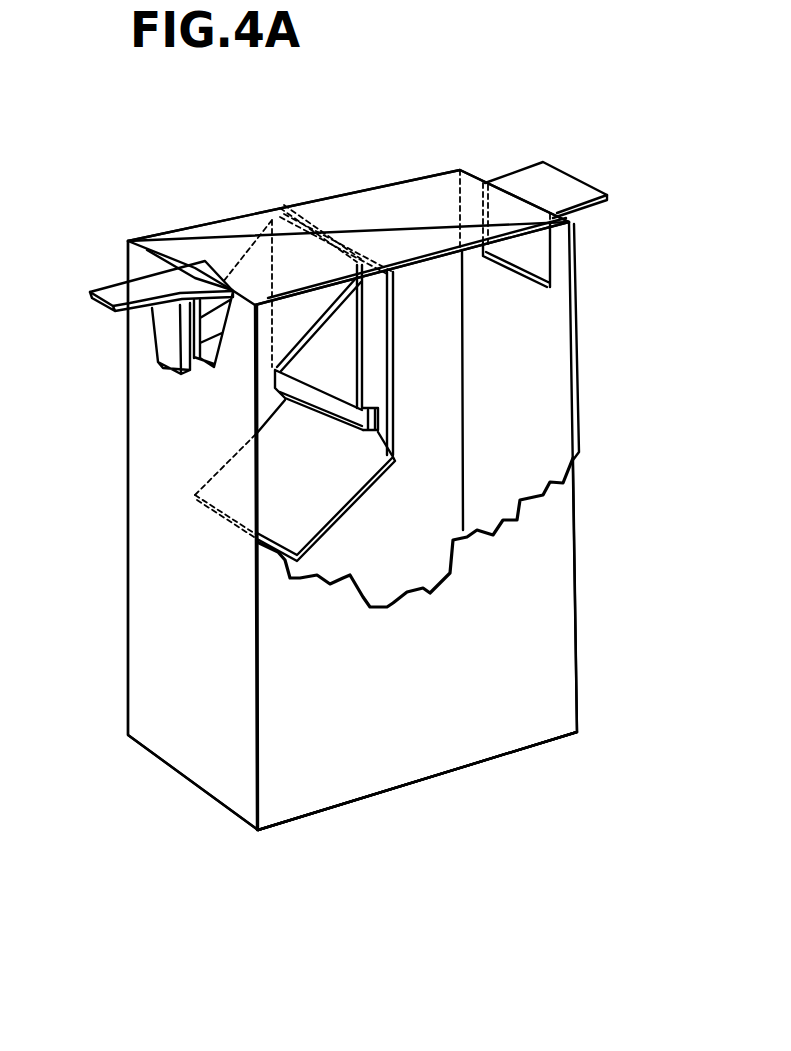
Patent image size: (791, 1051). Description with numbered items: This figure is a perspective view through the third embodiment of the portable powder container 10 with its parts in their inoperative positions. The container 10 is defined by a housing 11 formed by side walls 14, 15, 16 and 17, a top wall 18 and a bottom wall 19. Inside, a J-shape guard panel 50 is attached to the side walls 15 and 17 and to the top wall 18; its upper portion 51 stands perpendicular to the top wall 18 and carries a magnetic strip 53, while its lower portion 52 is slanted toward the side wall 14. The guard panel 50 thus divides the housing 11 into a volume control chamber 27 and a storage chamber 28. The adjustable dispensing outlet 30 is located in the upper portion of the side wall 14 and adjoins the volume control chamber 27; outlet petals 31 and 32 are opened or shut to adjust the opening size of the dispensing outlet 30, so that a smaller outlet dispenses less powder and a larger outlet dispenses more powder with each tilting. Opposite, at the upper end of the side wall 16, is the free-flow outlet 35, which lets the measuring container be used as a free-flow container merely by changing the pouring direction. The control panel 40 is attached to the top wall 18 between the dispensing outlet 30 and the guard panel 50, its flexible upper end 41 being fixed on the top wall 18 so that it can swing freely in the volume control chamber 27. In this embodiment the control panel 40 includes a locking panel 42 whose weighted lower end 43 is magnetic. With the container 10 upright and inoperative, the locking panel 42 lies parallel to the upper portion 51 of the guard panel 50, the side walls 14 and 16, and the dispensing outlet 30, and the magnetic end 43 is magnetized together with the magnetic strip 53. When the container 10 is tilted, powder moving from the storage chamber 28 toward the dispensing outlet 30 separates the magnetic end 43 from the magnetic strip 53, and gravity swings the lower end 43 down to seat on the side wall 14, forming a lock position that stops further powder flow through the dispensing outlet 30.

The portable powder container 10 is at (603, 512).
The housing 11 is at (583, 582).
The side wall 14 is at (180, 648).
The side wall 15 is at (555, 700).
The side wall 16 is at (533, 352).
The side wall 17 is at (405, 182).
The top wall 18 is at (441, 192).
The bottom wall 19 is at (490, 765).
The volume control chamber 27 is at (310, 375).
The storage chamber 28 is at (372, 582).
The adjustable dispensing outlet 30 is at (223, 307).
The outlet petal 31 is at (105, 278).
The outlet petal 32 is at (157, 333).
The free-flow outlet 35 is at (530, 257).
The control panel 40 is at (287, 258).
The upper end of control panel 41 is at (235, 246).
The locking panel 42 is at (288, 400).
The lower end of locking panel 43 is at (372, 434).
The guard panel 50 is at (397, 352).
The upper portion of guard panel 51 is at (377, 332).
The lower portion of guard panel 52 is at (323, 500).
The magnetic strip 53 is at (378, 421).